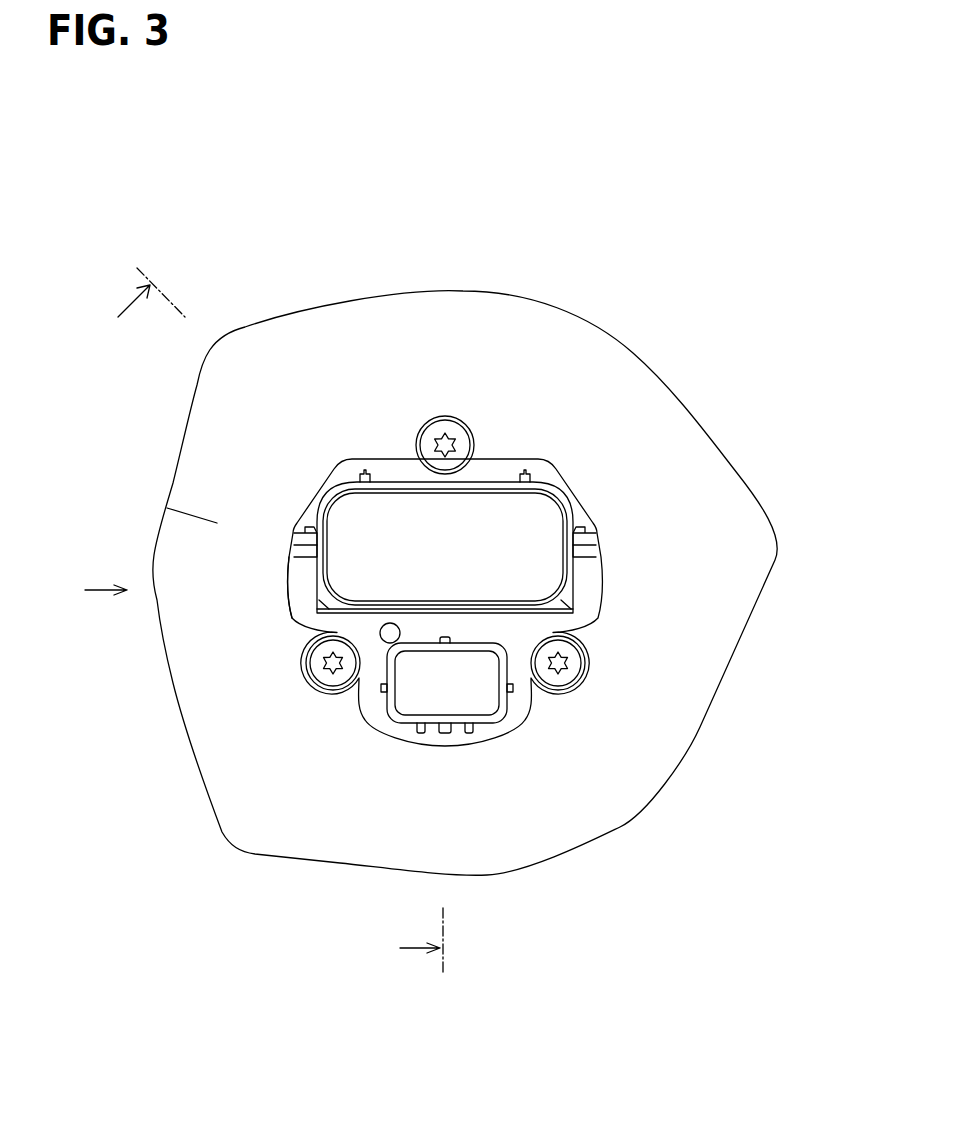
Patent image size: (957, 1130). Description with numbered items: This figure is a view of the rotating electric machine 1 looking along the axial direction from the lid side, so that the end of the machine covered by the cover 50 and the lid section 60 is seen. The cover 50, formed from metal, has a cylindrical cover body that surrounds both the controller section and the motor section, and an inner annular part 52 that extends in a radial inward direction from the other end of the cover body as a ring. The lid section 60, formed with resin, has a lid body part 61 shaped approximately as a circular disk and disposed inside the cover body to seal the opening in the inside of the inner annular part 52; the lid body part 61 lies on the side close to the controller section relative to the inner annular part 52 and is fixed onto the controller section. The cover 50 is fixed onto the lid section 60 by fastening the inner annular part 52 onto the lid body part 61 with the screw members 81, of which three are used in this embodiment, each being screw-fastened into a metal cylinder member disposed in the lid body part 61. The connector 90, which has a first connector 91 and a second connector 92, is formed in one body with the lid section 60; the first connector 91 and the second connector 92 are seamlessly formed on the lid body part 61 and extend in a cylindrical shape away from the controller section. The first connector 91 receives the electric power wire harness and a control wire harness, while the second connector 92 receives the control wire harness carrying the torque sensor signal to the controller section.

The rotating electric machine 1 is at (617, 293).
The cover 50 is at (693, 413).
The inner annular part 52 is at (710, 470).
The lid section 60 is at (307, 573).
The lid body part 61 is at (302, 603).
The screw member 81 is at (445, 426).
The connector 90 is at (584, 603).
The first connector 91 is at (597, 545).
The second connector 92 is at (503, 698).